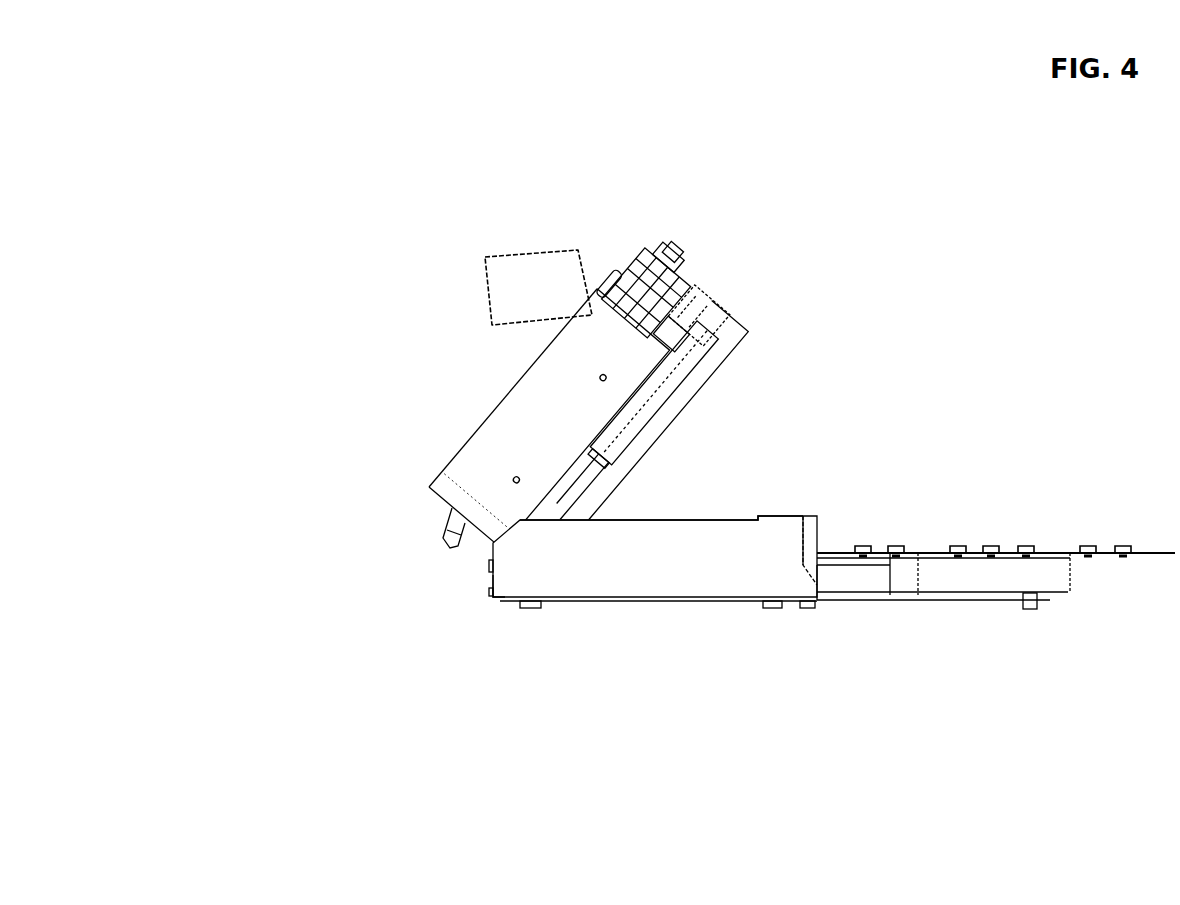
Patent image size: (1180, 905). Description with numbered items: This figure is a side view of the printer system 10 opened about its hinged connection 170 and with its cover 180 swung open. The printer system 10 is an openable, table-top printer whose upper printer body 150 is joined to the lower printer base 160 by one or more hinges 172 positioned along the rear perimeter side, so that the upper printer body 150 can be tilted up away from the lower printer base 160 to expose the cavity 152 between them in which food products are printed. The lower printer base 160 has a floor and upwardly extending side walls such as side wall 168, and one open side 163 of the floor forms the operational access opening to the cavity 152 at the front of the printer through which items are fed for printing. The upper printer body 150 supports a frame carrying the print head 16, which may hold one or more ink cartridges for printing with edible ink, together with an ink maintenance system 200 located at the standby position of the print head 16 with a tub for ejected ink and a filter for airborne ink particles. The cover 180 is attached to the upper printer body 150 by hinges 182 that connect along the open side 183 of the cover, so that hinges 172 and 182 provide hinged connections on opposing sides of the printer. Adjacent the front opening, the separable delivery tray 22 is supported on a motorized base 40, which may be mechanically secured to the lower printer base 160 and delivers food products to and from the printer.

The printer system 10 is at (345, 295).
The print head 16 is at (718, 358).
The delivery tray 22 is at (996, 552).
The motorized base 40 is at (1050, 578).
The upper printer body 150 is at (549, 419).
The cavity 152 is at (661, 518).
The lower printer base 160 is at (630, 520).
The open side 163 is at (813, 537).
The side wall 168 is at (493, 578).
The hinged connection 170 is at (473, 558).
The hinge 172 is at (493, 549).
The cover 180 is at (532, 273).
The hinge 182 is at (538, 409).
The open side 183 is at (534, 250).
The ink maintenance system 200 is at (644, 417).